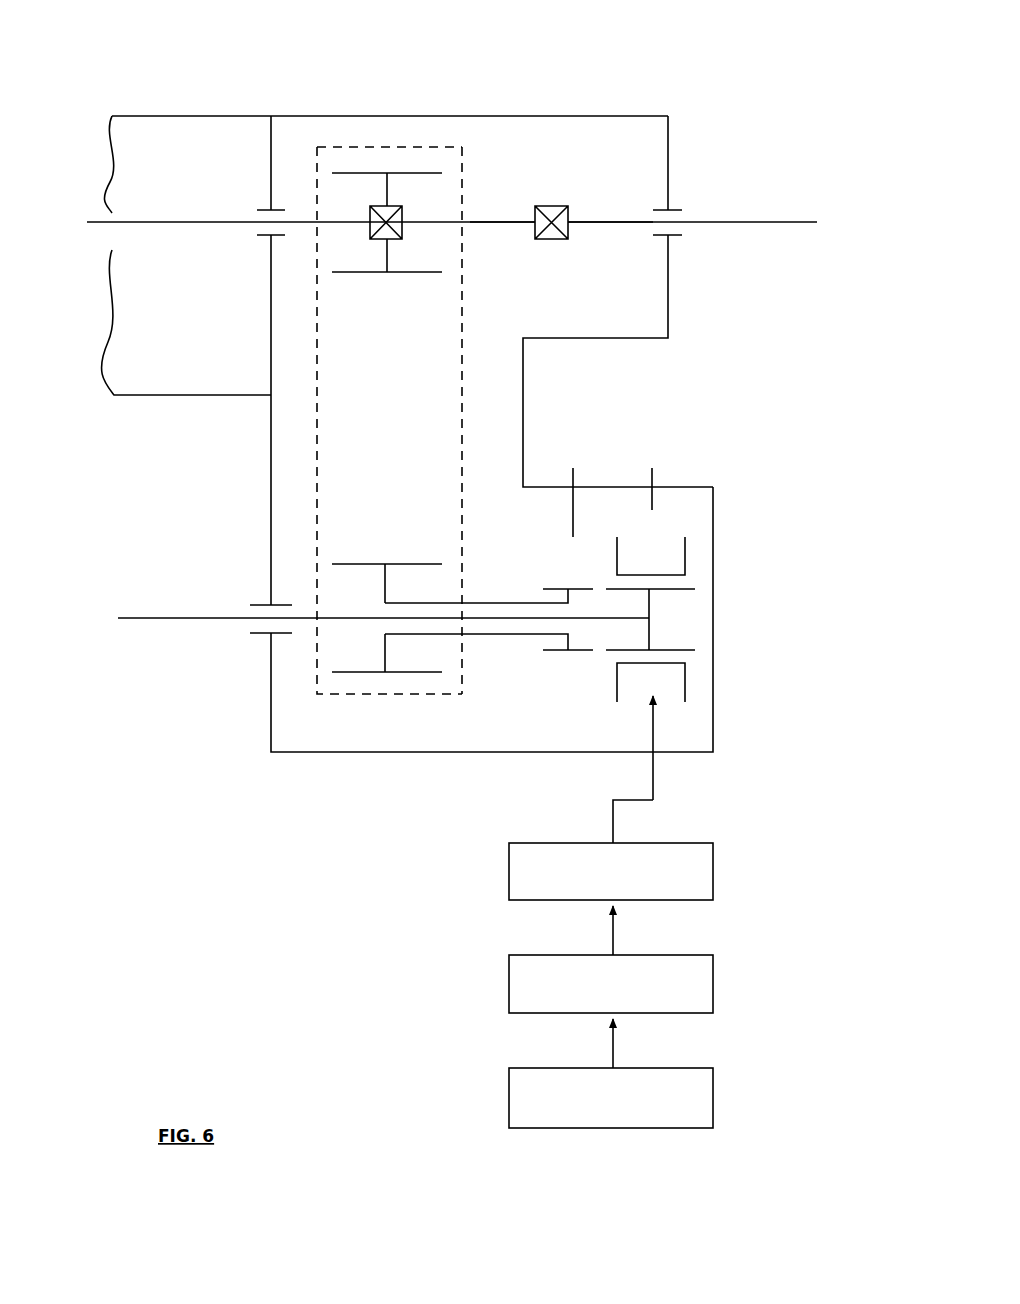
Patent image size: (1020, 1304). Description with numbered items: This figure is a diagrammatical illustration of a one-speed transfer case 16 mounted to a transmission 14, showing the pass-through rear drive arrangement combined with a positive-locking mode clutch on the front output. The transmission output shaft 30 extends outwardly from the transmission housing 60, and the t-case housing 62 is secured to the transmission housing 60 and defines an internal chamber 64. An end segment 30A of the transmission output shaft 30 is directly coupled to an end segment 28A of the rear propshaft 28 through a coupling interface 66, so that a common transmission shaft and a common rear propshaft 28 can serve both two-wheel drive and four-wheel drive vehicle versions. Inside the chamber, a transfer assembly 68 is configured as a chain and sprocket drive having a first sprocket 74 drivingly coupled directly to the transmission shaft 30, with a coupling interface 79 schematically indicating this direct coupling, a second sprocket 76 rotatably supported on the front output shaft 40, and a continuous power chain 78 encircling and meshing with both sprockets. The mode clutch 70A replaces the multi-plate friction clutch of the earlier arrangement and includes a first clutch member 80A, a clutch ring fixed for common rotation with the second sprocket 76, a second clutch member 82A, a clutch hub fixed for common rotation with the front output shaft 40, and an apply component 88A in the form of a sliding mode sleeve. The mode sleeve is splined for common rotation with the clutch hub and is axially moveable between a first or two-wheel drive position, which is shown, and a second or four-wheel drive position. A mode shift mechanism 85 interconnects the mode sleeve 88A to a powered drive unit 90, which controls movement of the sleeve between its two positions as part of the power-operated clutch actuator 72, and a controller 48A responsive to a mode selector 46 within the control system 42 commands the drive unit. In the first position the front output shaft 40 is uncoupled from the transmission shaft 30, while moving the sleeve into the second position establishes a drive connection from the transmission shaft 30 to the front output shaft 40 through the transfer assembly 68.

The transmission 14 is at (111, 410).
The transfer case 16 is at (608, 79).
The rear propshaft 28 is at (790, 222).
The end segment of rear propshaft 28A is at (595, 222).
The transmission output shaft 30 is at (205, 225).
The end segment of transmission output shaft 30A is at (505, 222).
The front output shaft 40 is at (155, 618).
The control system 42 is at (474, 930).
The mode selector 46 is at (713, 1095).
The controller 48A is at (713, 980).
The transmission housing 60 is at (196, 116).
The t-case housing 62 is at (668, 127).
The internal chamber 64 is at (650, 298).
The coupling interface 66 is at (551, 239).
The transfer assembly 68 is at (307, 446).
The mode clutch 70A is at (700, 524).
The power-operated clutch actuator 72 is at (720, 782).
The first sprocket 74 is at (425, 173).
The second sprocket 76 is at (365, 563).
The continuous power chain 78 is at (462, 408).
The coupling interface 79 is at (376, 206).
The first clutch member 80A is at (533, 637).
The second clutch member 82A is at (649, 632).
The mode shift mechanism 85 is at (653, 735).
The apply component 88A is at (685, 688).
The powered drive unit 90 is at (713, 872).